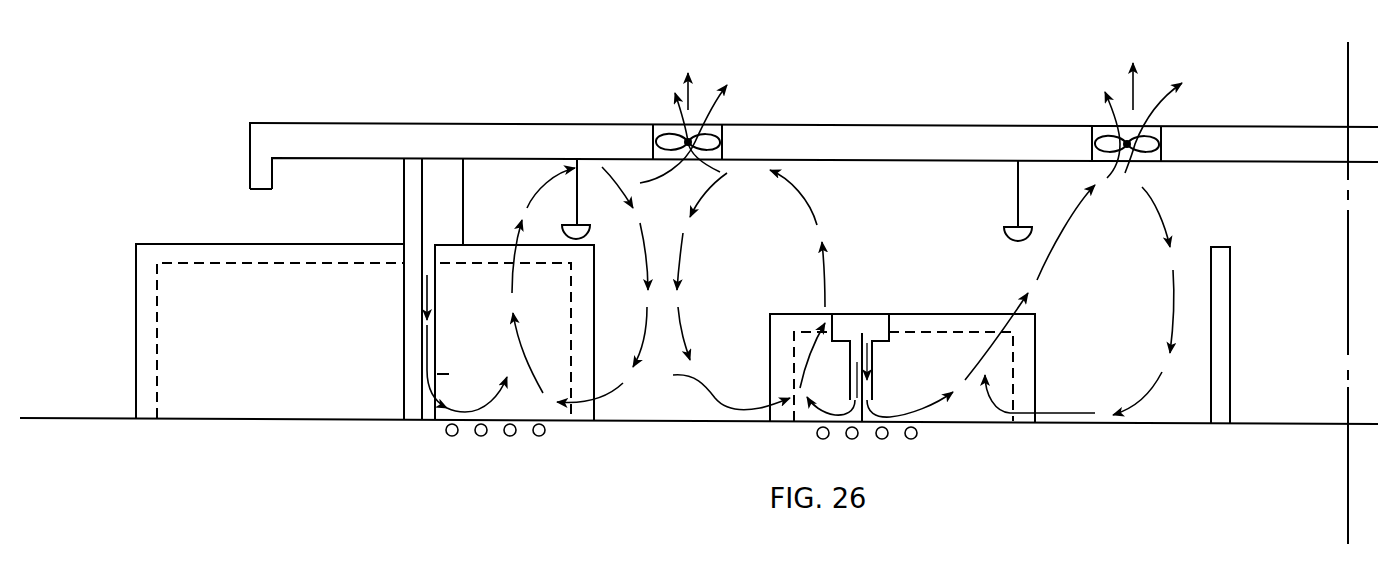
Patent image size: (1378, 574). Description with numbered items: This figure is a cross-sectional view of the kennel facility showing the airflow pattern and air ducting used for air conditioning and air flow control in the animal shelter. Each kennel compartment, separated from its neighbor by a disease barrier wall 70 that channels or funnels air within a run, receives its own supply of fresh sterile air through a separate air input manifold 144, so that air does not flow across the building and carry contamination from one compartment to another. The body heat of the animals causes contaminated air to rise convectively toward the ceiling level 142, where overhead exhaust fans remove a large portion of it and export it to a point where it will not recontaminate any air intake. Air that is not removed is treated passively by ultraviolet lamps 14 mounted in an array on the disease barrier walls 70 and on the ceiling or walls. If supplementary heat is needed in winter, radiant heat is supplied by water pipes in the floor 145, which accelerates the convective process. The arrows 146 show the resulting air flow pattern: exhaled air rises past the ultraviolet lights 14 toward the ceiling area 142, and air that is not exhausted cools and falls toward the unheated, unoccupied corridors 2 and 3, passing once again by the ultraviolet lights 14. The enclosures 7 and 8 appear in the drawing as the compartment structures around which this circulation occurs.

The unoccupied corridor 2 is at (670, 420).
The unoccupied corridor 3 is at (1185, 423).
The chamber 7 is at (594, 404).
The chamber 8 is at (884, 368).
The ultraviolet lamp 14 is at (584, 224).
The disease barrier wall 70 is at (707, 358).
The ceiling level 142 is at (814, 156).
The air input manifold 144 is at (885, 380).
The floor 145 is at (505, 437).
The arrows 146 is at (637, 370).